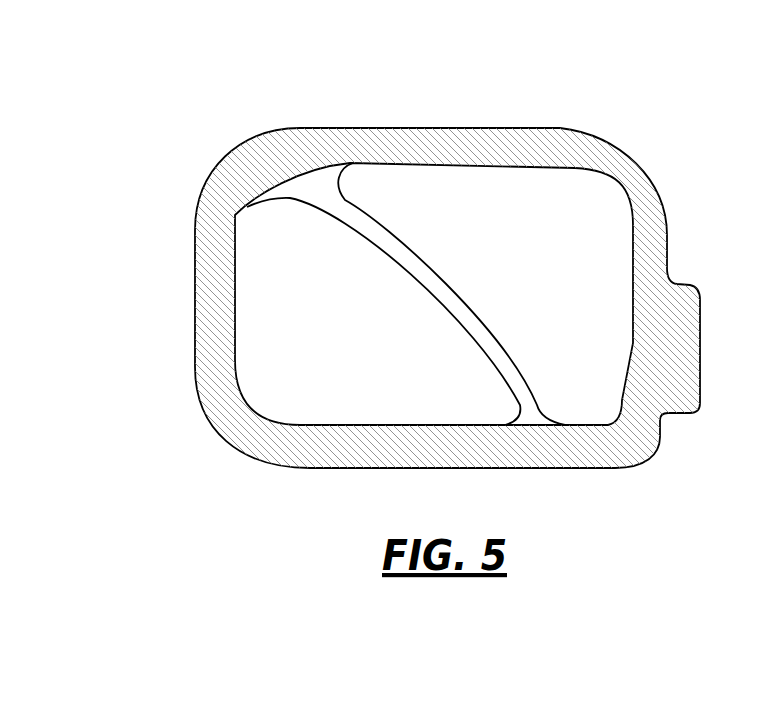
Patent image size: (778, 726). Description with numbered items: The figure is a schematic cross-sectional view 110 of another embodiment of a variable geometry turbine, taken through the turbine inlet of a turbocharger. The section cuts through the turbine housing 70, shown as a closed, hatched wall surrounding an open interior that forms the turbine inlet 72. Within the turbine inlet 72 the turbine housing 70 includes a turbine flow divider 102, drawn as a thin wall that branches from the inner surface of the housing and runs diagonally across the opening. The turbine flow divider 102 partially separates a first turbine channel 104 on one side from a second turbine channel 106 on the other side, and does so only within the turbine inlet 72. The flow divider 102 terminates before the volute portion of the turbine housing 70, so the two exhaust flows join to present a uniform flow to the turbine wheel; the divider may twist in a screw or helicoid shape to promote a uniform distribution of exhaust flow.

The cross-sectional view 110 is at (90, 97).
The turbine housing 70 is at (260, 147).
The turbine inlet 72 is at (270, 293).
The turbine flow divider 102 is at (387, 230).
The first turbine channel 104 is at (383, 301).
The second turbine channel 106 is at (447, 284).